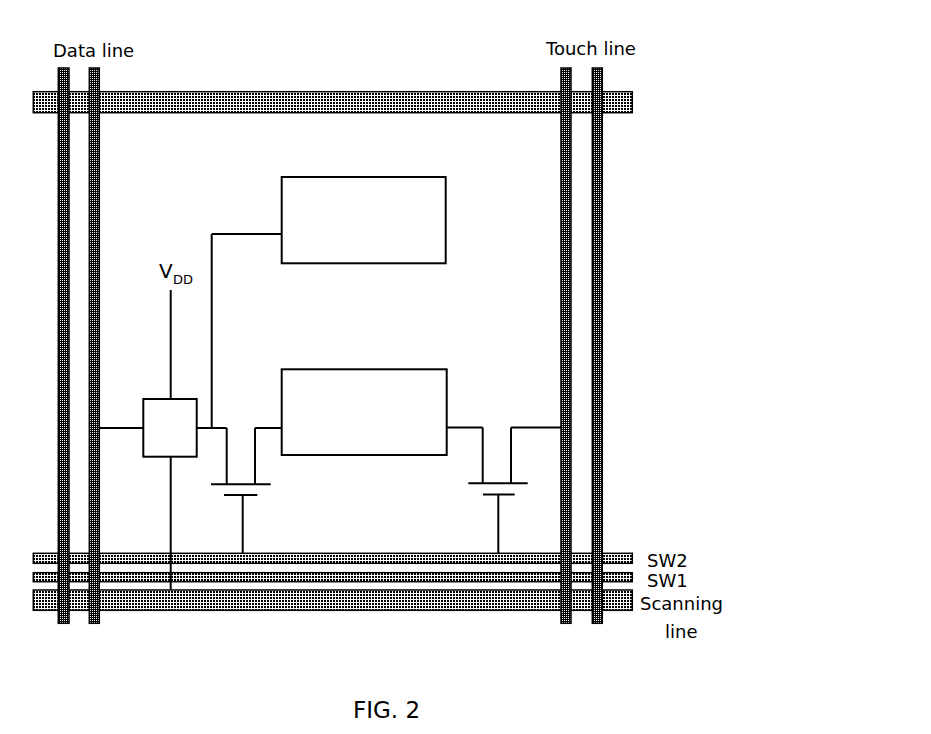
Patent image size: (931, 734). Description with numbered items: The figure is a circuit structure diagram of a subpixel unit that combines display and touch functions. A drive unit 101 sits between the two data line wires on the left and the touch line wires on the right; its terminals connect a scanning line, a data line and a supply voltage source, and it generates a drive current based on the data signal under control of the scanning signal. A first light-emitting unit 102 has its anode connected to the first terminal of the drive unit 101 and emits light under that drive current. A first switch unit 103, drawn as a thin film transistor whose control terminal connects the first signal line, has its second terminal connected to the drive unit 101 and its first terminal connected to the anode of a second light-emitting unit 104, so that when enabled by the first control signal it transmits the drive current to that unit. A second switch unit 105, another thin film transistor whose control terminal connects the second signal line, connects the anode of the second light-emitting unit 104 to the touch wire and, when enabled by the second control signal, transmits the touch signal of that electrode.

The drive unit 101 is at (169, 428).
The first light-emitting unit 102 is at (364, 220).
The first switch unit 103 is at (193, 518).
The second light-emitting unit 104 is at (364, 412).
The second switch unit 105 is at (451, 518).